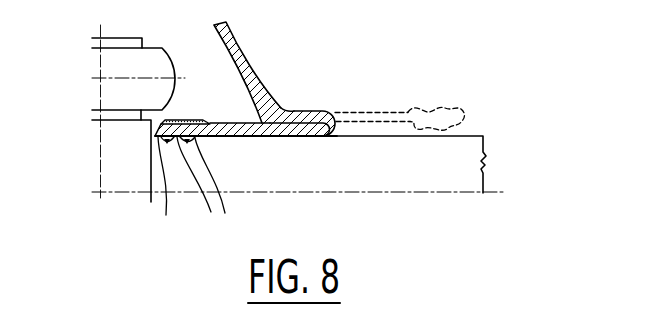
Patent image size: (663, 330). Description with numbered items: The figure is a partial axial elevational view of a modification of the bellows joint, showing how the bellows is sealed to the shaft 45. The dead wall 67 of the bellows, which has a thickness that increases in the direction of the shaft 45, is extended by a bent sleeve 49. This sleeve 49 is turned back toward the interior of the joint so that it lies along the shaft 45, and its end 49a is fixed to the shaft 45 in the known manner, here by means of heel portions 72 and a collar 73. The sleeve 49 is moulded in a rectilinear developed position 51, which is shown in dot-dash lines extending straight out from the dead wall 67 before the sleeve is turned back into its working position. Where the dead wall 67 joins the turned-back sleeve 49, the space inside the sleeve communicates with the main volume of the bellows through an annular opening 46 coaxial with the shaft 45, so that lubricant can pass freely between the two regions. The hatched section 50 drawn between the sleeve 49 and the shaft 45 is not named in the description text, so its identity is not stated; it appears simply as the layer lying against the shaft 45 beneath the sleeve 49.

The shaft 45 is at (398, 180).
The annular opening 46 is at (279, 107).
The bent sleeve 49 is at (328, 107).
The end of the sleeve 49a is at (176, 192).
The bar strip 50 is at (263, 137).
The rectilinear developed position 51 is at (408, 108).
The dead wall 67 is at (244, 54).
The heel portions 72 is at (211, 190).
The collar 73 is at (189, 119).